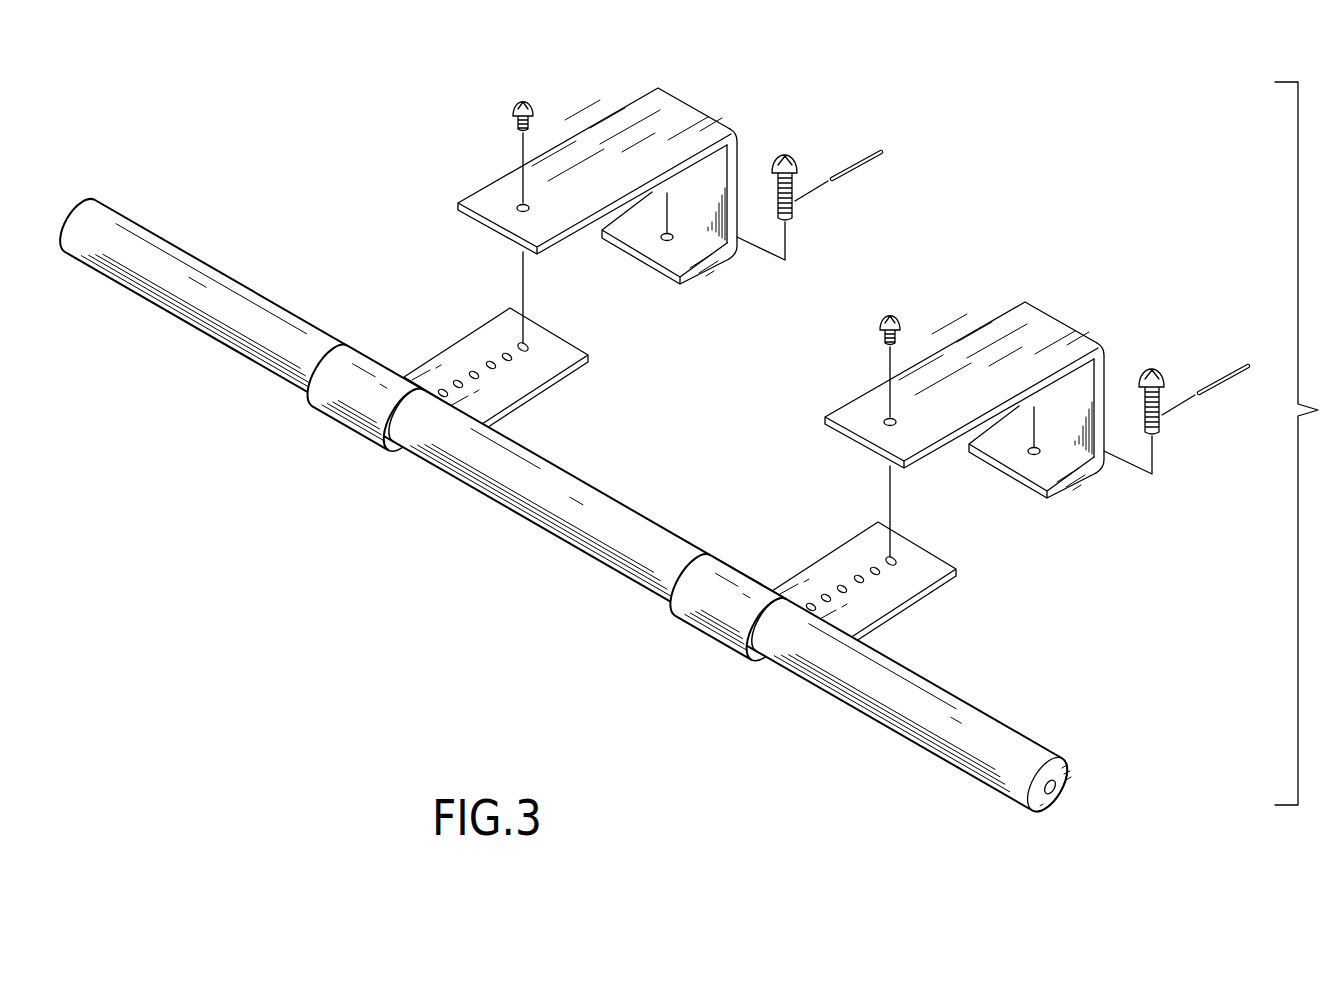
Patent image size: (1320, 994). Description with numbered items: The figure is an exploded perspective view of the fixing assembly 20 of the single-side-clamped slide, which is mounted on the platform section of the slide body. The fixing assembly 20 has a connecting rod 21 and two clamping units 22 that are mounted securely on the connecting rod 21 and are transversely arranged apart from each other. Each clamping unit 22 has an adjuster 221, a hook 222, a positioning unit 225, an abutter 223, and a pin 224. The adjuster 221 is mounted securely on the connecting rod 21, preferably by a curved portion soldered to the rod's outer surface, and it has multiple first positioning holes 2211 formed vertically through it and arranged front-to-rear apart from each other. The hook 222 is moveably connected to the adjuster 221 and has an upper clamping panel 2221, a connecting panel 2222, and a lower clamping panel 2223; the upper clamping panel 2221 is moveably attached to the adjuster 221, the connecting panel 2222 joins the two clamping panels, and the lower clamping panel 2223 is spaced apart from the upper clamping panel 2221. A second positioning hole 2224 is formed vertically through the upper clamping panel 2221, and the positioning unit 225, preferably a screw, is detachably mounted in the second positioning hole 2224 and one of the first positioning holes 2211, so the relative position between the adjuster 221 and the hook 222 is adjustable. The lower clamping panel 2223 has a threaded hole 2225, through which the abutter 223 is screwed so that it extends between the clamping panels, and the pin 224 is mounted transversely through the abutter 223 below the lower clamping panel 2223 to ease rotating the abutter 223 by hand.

The fixing assembly 20 is at (392, 546).
The connecting rod 21 is at (583, 533).
The clamping unit 22 is at (778, 94).
The adjuster 221 is at (837, 558).
The first positioning holes 2211 is at (895, 562).
The hook 222 is at (979, 314).
The upper clamping panel 2221 is at (862, 408).
The connecting panel 2222 is at (1088, 383).
The lower clamping panel 2223 is at (1062, 469).
The second positioning hole 2224 is at (884, 425).
The threaded hole 2225 is at (1033, 456).
The positioning unit 225 is at (884, 338).
The abutter 223 is at (1158, 423).
The pin 224 is at (1218, 392).